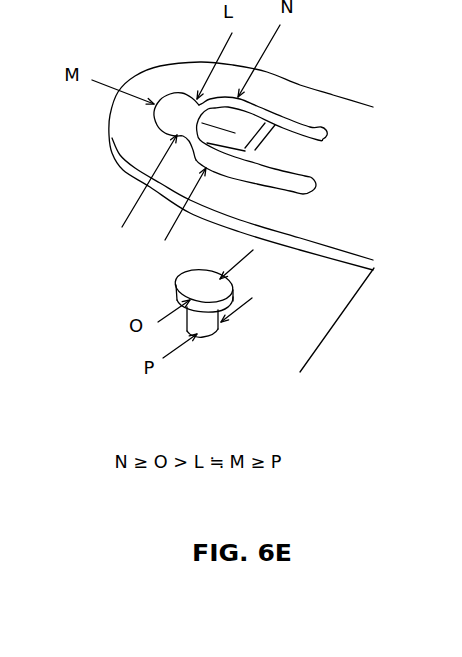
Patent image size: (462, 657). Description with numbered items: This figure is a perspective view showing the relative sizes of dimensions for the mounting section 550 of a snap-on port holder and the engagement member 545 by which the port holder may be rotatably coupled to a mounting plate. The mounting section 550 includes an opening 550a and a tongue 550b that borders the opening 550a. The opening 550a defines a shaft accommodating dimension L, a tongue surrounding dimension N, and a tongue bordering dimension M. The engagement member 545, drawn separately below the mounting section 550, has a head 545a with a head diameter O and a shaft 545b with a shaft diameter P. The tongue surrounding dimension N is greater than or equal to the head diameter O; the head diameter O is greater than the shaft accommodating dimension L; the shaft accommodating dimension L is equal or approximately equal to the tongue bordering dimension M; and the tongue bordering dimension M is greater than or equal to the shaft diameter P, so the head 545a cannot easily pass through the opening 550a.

The mounting section 550 is at (353, 115).
The opening 550a is at (175, 134).
The tongue 550b is at (290, 158).
The engagement member 545 is at (197, 323).
The head 545a is at (190, 282).
The shaft 545b is at (221, 322).